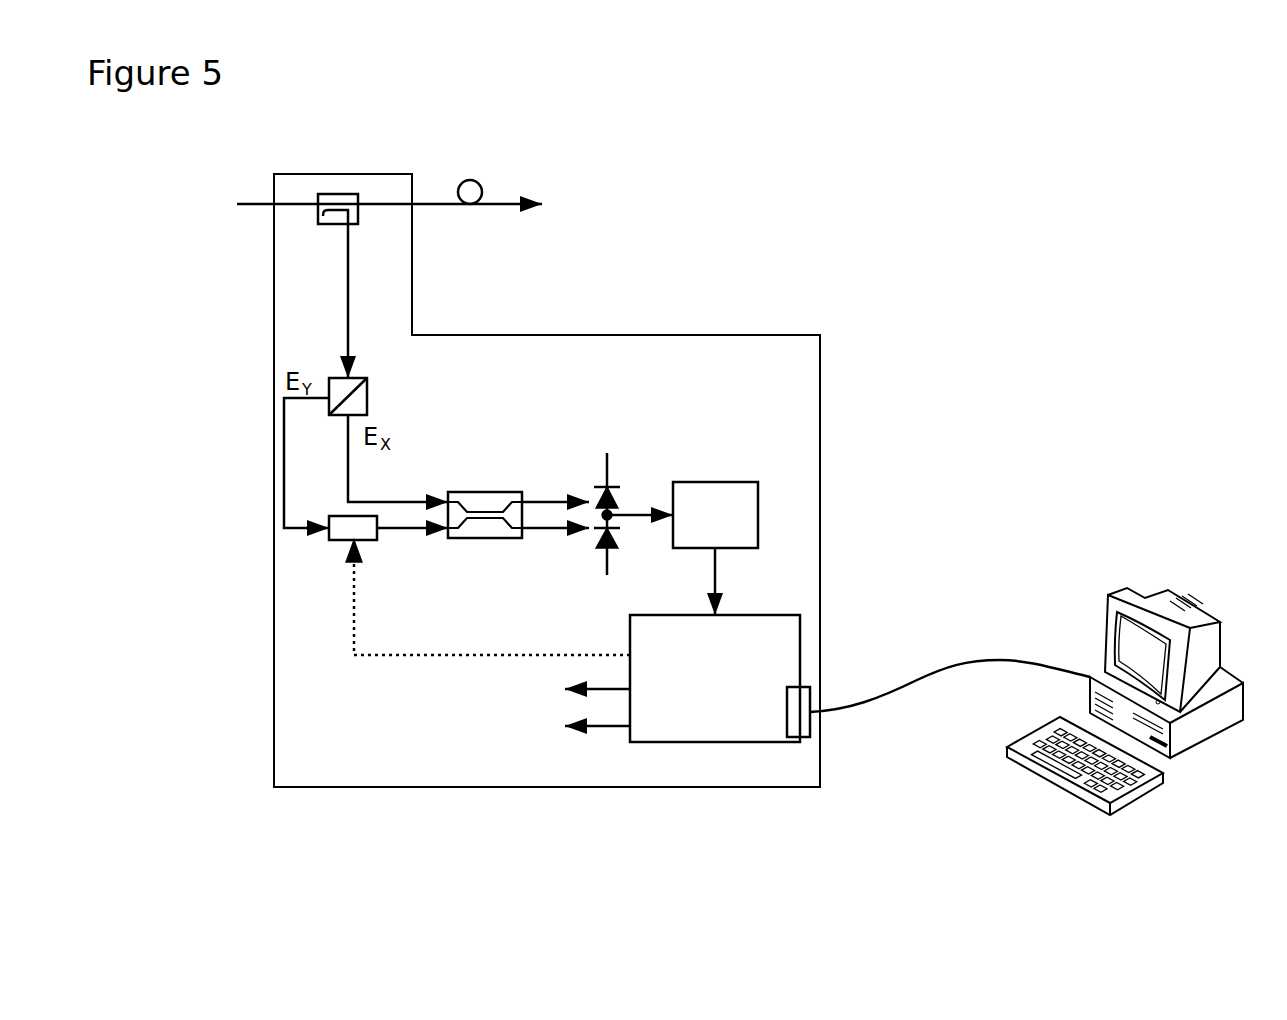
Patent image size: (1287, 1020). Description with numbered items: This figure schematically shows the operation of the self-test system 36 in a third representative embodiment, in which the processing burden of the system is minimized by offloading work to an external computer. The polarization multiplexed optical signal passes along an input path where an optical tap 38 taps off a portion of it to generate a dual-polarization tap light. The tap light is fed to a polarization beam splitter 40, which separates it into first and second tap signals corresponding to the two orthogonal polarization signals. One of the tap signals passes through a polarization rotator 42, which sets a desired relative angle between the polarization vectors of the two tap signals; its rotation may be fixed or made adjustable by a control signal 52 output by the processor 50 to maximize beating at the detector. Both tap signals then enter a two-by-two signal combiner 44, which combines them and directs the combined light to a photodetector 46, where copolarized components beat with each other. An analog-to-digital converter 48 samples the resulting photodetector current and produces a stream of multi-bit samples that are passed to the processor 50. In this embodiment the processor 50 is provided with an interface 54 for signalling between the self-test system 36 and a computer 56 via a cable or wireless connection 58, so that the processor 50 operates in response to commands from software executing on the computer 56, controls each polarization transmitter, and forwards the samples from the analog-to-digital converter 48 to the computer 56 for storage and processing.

The self-test system 36 is at (663, 335).
The optical tap 38 is at (352, 194).
The polarization beam splitter 40 is at (367, 398).
The polarization rotator 42 is at (338, 540).
The 2×2 signal combiner 44 is at (486, 492).
The photodetector 46 is at (631, 480).
The Analog-to-Digital Converter 48 is at (745, 482).
The processor 50 is at (778, 661).
The control signal 52 is at (472, 655).
The interface 54 is at (810, 723).
The computer 56 is at (1117, 594).
The cable or wireless connection 58 is at (963, 658).